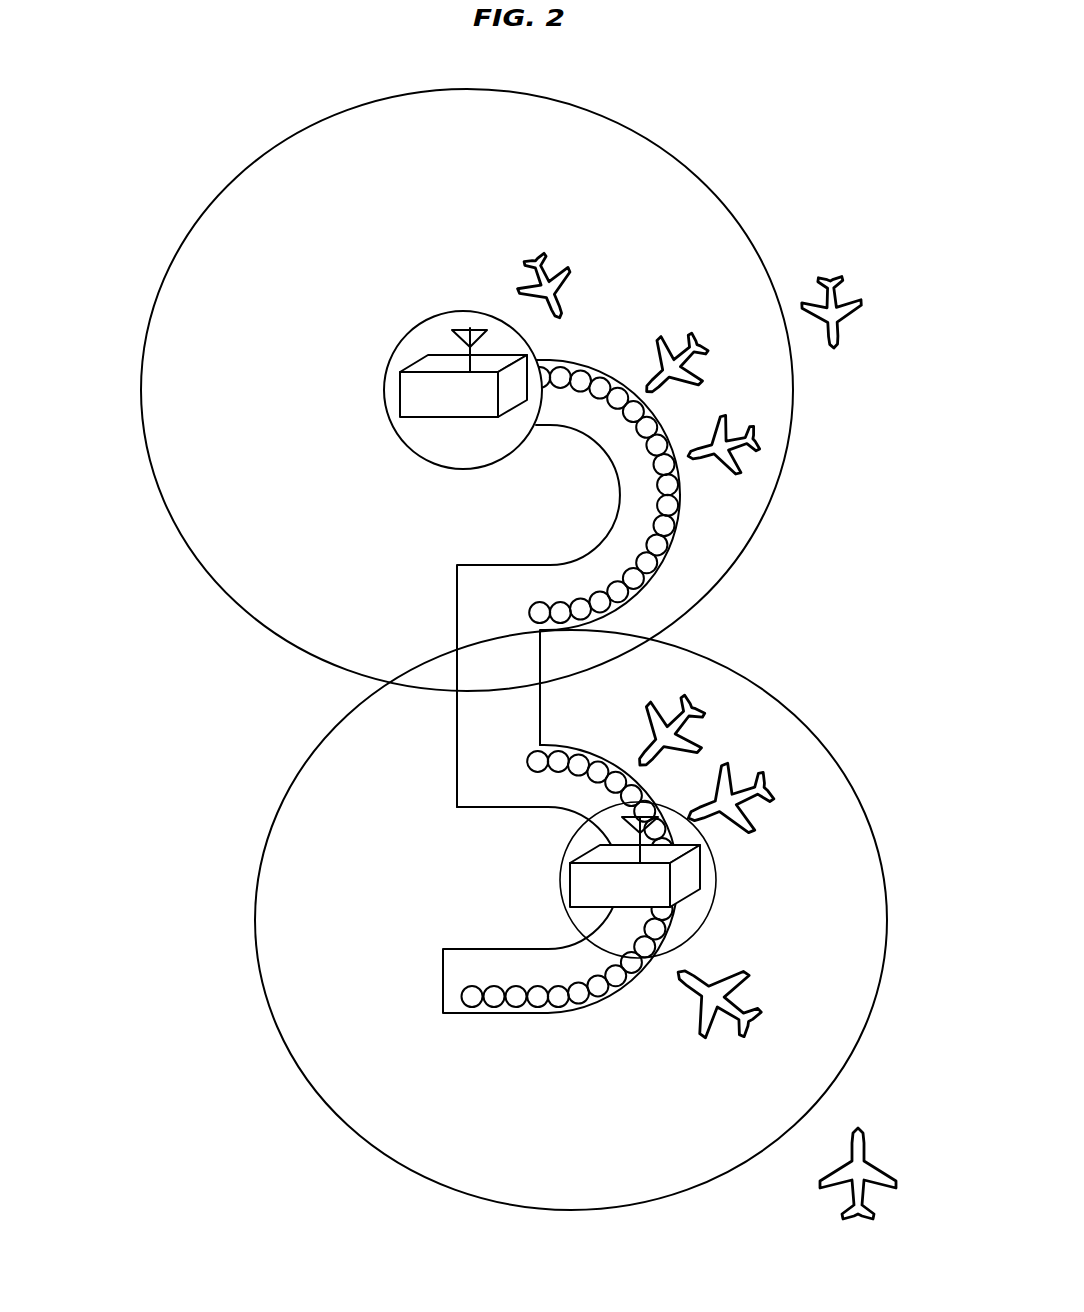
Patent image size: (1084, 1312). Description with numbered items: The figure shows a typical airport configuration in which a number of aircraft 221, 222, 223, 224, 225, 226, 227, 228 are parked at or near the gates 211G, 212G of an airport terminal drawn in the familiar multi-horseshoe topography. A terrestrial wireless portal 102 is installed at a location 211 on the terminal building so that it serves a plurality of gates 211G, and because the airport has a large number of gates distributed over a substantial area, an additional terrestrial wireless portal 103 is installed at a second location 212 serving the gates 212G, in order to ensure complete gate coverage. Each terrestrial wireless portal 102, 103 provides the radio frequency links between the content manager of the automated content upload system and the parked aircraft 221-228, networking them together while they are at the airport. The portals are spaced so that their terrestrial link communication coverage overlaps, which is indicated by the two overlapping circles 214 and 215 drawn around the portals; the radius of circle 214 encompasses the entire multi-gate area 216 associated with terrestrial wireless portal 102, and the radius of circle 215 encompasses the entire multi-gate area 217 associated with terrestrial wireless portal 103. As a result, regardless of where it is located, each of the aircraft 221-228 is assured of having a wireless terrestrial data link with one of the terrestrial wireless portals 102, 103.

The terrestrial wireless portal 102 is at (472, 408).
The terrestrial wireless portal 103 is at (639, 898).
The terrestrial wireless portal location 211 is at (450, 396).
The terrestrial wireless portal location 212 is at (673, 880).
The gates 211G is at (650, 530).
The gates 212G is at (602, 795).
The terrestrial link communication coverage circle 214 is at (142, 358).
The terrestrial link communication coverage circle 215 is at (836, 755).
The multi-gate area 216 is at (682, 547).
The multi-gate area 217 is at (668, 923).
The aircraft 221 is at (696, 714).
The aircraft 222 is at (741, 992).
The aircraft 223 is at (757, 806).
The aircraft 224 is at (558, 264).
The aircraft 225 is at (680, 342).
The aircraft 226 is at (737, 434).
The aircraft 227 is at (841, 335).
The aircraft 228 is at (865, 1146).